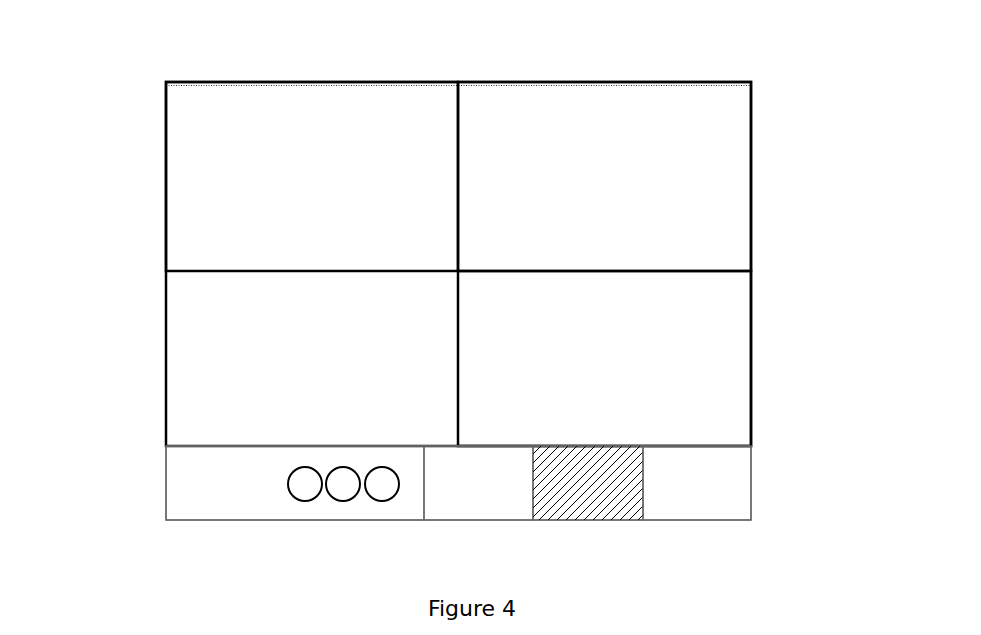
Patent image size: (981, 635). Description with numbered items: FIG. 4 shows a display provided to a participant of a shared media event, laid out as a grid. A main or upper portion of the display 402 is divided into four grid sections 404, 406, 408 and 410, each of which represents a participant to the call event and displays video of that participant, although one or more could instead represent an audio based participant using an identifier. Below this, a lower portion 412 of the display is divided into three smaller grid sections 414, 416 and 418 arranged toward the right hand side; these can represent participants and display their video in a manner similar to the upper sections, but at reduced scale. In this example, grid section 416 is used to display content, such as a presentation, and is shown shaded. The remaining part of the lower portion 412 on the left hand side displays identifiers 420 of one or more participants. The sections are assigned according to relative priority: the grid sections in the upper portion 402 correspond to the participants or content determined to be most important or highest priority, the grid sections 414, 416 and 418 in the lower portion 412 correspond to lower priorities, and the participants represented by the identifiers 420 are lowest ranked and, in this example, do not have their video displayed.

The upper portion of the display 402 is at (133, 82).
The grid section 404 is at (280, 139).
The grid section 406 is at (696, 132).
The grid section 408 is at (715, 352).
The grid section 410 is at (245, 382).
The lower portion of the display 412 is at (133, 447).
The grid section 414 is at (715, 484).
The grid section 416 is at (612, 483).
The grid section 418 is at (520, 490).
The identifiers 420 is at (280, 535).